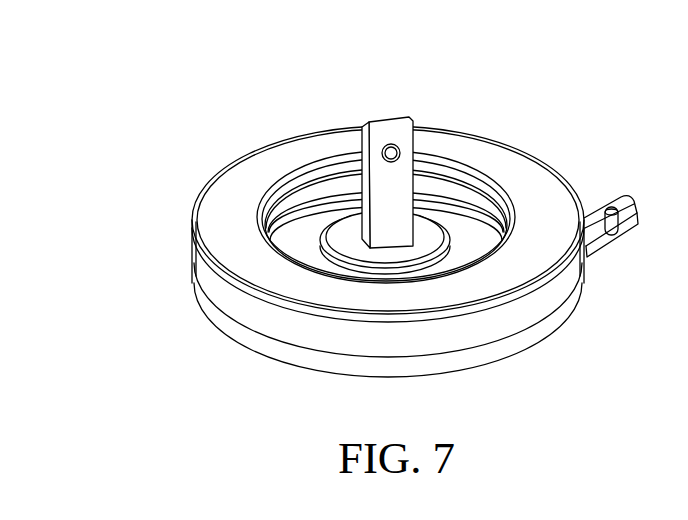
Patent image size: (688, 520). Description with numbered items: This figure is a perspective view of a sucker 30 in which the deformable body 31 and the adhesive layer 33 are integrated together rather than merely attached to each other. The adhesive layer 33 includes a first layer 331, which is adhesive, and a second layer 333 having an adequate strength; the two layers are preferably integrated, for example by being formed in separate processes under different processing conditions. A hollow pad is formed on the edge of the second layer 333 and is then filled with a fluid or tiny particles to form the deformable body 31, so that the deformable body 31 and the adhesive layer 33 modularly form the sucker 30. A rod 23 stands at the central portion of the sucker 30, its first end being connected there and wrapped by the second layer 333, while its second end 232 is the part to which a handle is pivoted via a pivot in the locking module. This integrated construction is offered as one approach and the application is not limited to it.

The sucker 30 is at (325, 195).
The deformable body 31 is at (236, 211).
The adhesive layer 33 is at (298, 273).
The first layer 331 is at (210, 305).
The second layer 333 is at (307, 249).
The rod 23 is at (346, 131).
The second end 232 is at (398, 123).